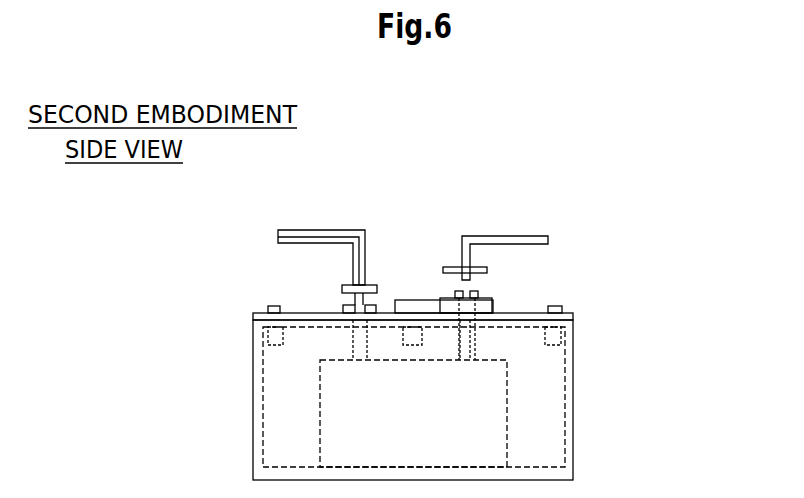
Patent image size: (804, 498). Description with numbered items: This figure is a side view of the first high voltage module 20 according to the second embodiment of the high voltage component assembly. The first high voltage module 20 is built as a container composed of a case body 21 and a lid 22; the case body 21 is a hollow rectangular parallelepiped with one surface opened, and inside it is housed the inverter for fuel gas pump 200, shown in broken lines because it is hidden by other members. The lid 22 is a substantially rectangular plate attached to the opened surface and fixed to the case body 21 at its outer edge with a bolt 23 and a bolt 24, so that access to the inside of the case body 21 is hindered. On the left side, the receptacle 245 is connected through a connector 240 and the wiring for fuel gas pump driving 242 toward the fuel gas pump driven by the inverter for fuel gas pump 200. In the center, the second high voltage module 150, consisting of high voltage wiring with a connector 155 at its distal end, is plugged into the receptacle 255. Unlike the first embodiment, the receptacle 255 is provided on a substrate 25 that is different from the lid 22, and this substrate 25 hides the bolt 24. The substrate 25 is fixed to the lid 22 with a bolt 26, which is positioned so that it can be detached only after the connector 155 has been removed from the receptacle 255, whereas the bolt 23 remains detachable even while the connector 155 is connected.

The first high voltage module 20 is at (639, 252).
The case body 21 is at (573, 384).
The lid 22 is at (540, 312).
The bolt 23 is at (270, 306).
The bolt 24 is at (378, 312).
The substrate 25 is at (403, 299).
The bolt 26 is at (488, 300).
The second high voltage module 150 is at (505, 236).
The connector 155 is at (452, 262).
The inverter for fuel gas pump 200 is at (433, 422).
The connector 240 is at (345, 285).
The wiring for fuel gas pump driving 242 is at (293, 230).
The receptacle 245 is at (340, 312).
The receptacle 255 is at (453, 292).